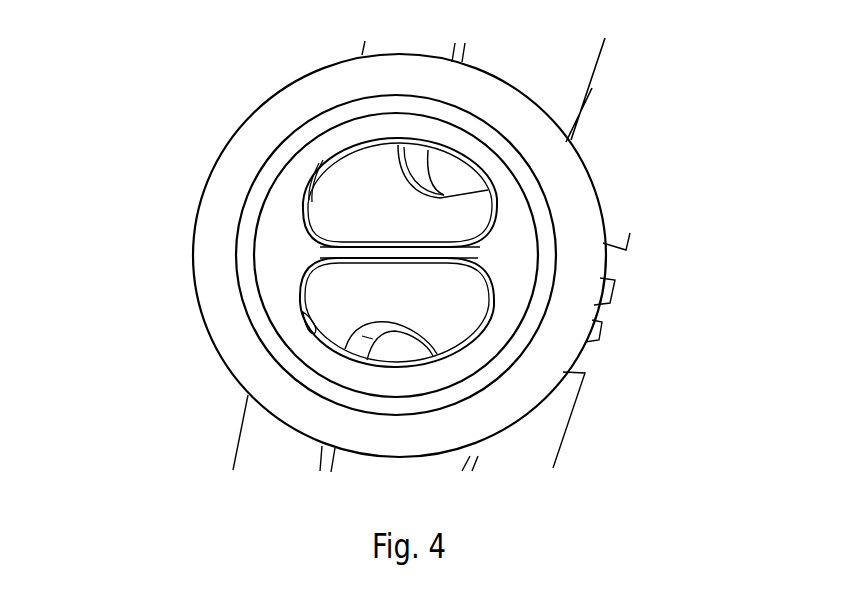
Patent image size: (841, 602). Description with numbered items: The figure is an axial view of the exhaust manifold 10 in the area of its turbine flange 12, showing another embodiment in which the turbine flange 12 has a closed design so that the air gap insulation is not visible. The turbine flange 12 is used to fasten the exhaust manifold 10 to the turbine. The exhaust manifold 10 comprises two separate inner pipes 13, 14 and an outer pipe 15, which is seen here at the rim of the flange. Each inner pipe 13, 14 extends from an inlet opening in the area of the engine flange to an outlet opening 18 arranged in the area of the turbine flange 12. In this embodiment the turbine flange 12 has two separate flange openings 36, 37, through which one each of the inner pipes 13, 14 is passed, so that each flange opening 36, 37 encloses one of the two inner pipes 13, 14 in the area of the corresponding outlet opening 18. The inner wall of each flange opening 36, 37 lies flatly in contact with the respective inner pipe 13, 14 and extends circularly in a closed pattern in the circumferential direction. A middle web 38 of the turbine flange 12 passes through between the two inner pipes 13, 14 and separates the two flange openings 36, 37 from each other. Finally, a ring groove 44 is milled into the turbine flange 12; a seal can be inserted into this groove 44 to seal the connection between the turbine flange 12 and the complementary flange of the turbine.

The exhaust manifold 10 is at (145, 133).
The turbine flange 12 is at (275, 126).
The inner pipe 13 is at (490, 188).
The inner pipe 14 is at (455, 347).
The outer pipe 15 is at (597, 90).
The outlet opening 18 is at (335, 234).
The flange opening 36 is at (303, 203).
The flange opening 37 is at (313, 333).
The middle web 38 is at (377, 254).
The ring groove 44 is at (545, 217).